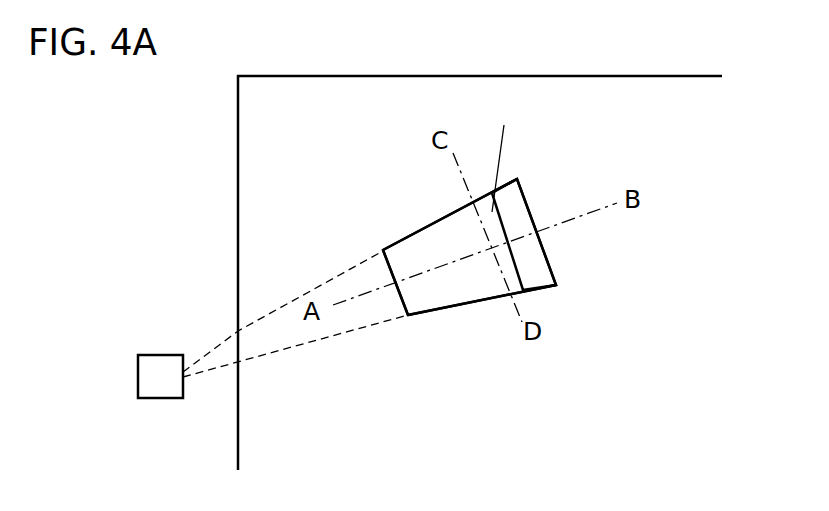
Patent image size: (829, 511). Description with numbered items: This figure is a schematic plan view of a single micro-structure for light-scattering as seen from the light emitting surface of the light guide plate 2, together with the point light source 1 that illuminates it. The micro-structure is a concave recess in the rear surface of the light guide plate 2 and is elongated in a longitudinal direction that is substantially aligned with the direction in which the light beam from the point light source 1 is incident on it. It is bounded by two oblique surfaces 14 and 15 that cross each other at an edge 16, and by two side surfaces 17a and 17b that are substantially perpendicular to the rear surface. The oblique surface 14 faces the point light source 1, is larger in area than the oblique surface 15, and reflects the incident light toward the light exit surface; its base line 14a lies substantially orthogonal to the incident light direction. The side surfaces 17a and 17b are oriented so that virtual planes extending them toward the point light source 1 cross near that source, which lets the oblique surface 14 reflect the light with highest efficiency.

The point light source 1 is at (138, 368).
The light guide plate 2 is at (289, 157).
The oblique surface 14 is at (482, 278).
The base line 14a is at (393, 278).
The oblique surface 15 is at (537, 267).
The edge 16 is at (508, 153).
The side surface 17a is at (430, 223).
The side surface 17b is at (443, 310).